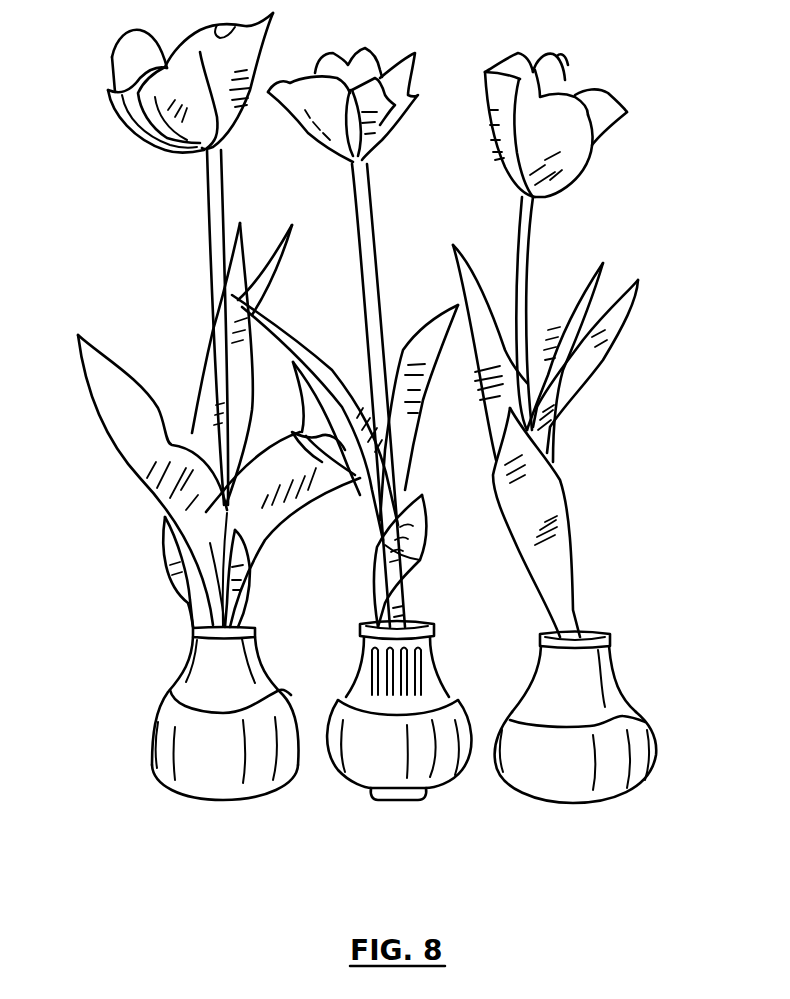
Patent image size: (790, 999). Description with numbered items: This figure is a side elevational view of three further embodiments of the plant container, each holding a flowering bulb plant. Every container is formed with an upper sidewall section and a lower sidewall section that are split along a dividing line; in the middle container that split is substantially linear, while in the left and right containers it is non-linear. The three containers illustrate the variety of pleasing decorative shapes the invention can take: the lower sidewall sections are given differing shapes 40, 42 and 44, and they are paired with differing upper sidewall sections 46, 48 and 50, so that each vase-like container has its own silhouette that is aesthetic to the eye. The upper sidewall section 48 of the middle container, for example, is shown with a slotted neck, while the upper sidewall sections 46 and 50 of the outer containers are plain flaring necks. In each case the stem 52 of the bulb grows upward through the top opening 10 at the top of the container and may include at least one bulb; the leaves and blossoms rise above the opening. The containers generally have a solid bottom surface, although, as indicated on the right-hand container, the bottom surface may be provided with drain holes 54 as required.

The top opening 10 is at (208, 580).
The lower sidewall section shape 40 is at (184, 705).
The lower sidewall section shape 42 is at (405, 704).
The lower sidewall section shape 44 is at (624, 707).
The upper sidewall section 46 is at (185, 673).
The upper sidewall section 48 is at (433, 670).
The upper sidewall section 50 is at (604, 668).
The stem 52 is at (525, 252).
The drain holes 54 is at (602, 805).